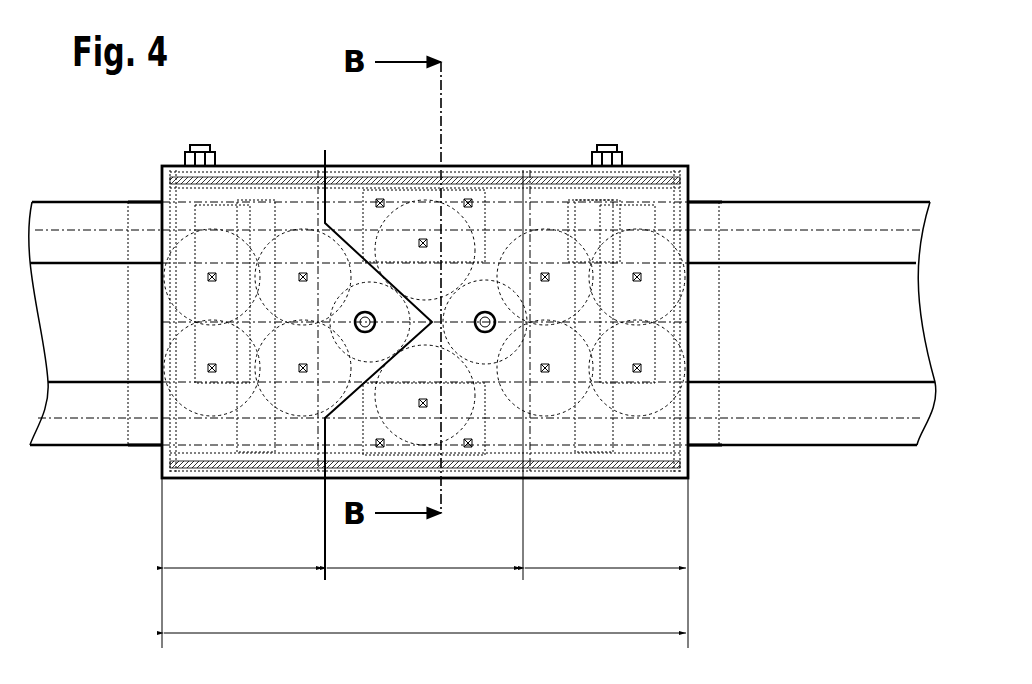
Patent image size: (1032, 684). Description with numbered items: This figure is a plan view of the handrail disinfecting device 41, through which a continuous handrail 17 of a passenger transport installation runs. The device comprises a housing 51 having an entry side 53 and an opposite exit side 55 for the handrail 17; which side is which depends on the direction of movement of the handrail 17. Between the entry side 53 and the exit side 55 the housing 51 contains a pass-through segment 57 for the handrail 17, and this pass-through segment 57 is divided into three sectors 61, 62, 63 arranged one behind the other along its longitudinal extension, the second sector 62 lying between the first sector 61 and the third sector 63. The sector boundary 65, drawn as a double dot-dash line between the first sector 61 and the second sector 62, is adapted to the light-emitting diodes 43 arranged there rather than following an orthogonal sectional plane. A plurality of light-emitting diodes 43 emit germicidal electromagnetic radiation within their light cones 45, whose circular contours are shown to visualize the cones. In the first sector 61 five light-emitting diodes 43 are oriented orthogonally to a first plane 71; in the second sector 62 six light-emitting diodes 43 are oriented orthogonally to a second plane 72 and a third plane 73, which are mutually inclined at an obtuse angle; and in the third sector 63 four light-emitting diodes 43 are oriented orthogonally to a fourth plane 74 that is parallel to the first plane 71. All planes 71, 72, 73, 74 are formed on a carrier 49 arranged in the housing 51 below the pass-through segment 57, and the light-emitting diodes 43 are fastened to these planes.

The handrail 17 is at (846, 210).
The handrail disinfecting device 41 is at (587, 100).
The light-emitting diode 43 is at (640, 274).
The light cone 45 is at (633, 248).
The carrier 49 is at (615, 380).
The housing 51 is at (283, 157).
The entry side 53 is at (150, 380).
The exit side 55 is at (698, 378).
The pass-through segment 57 is at (392, 632).
The first sector 61 is at (245, 570).
The second sector 62 is at (437, 570).
The third sector 63 is at (612, 570).
The sector boundary 65 is at (325, 522).
The first plane 71 is at (228, 270).
The second plane 72 is at (475, 450).
The third plane 73 is at (401, 178).
The fourth plane 74 is at (613, 268).